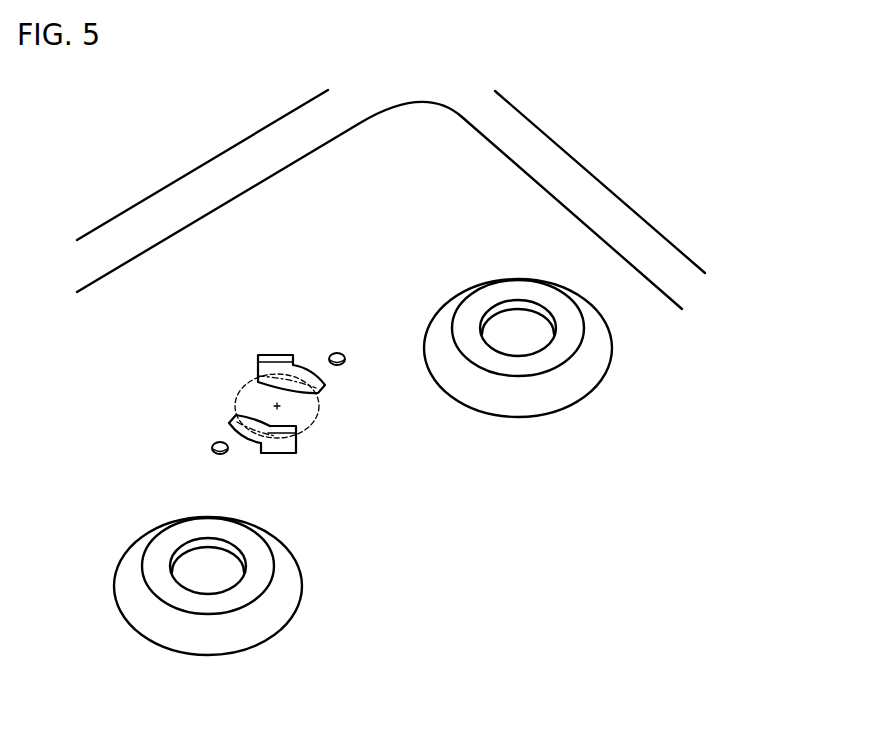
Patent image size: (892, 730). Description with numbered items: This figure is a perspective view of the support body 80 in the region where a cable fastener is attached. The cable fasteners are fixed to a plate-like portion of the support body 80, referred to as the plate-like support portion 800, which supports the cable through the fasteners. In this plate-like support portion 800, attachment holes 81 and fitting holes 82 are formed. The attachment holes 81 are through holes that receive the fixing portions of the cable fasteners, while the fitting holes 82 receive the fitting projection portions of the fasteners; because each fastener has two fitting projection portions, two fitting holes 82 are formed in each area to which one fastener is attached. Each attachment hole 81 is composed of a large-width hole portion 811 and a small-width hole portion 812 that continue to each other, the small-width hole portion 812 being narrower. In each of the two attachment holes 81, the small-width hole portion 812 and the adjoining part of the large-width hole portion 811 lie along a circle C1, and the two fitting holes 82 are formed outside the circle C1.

The support body 80 is at (160, 190).
The plate-like support portion 800 is at (279, 375).
The attachment hole 81 is at (284, 403).
The large-width hole portion 811 is at (271, 355).
The small-width hole portion 812 is at (314, 371).
The fitting hole 82 is at (340, 353).
The circle C1 is at (246, 386).